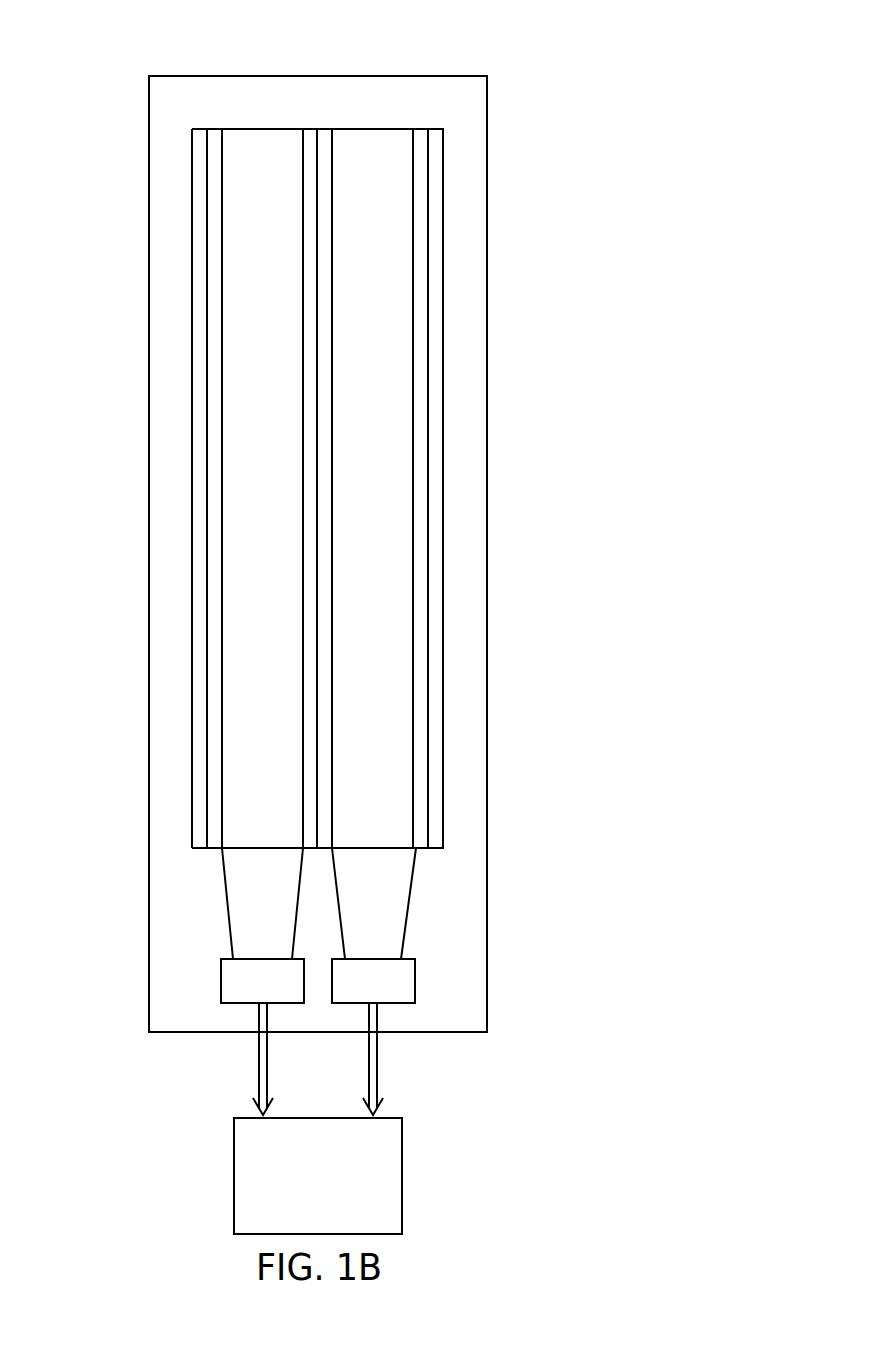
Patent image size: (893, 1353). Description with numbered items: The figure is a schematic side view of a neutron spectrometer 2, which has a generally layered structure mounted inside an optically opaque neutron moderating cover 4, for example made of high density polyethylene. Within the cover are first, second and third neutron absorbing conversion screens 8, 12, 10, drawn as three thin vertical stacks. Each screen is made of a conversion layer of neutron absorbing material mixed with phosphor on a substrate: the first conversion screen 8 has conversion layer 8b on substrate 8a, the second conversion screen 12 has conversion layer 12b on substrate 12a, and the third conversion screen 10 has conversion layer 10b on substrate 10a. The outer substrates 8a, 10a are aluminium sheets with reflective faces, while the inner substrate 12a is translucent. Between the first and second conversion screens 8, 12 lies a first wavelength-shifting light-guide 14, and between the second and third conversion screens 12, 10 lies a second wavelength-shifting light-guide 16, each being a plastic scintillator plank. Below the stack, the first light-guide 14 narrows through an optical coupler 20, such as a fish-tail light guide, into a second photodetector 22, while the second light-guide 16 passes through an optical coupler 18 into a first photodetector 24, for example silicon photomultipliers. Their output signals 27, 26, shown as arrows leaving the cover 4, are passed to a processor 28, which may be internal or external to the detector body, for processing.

The neutron spectrometer 2 is at (144, 71).
The neutron moderating cover 4 is at (165, 160).
The first conversion screen 8 is at (413, 121).
The first substrate 8a is at (435, 704).
The first conversion layer 8b is at (422, 647).
The third conversion screen 10 is at (192, 121).
The third substrate 10a is at (198, 323).
The third conversion layer 10b is at (213, 428).
The second conversion screen 12 is at (303, 121).
The second substrate 12a is at (309, 493).
The second conversion layer 12b is at (326, 545).
The first wavelength-shifting light-guide 14 is at (378, 757).
The second wavelength-shifting light-guide 16 is at (260, 763).
The optical coupler 18 is at (260, 935).
The optical coupler 20 is at (375, 862).
The second photodetector 22 is at (373, 981).
The first photodetector 24 is at (260, 982).
The output signal 26 is at (260, 1058).
The output signal 27 is at (375, 1058).
The processor 28 is at (335, 1193).